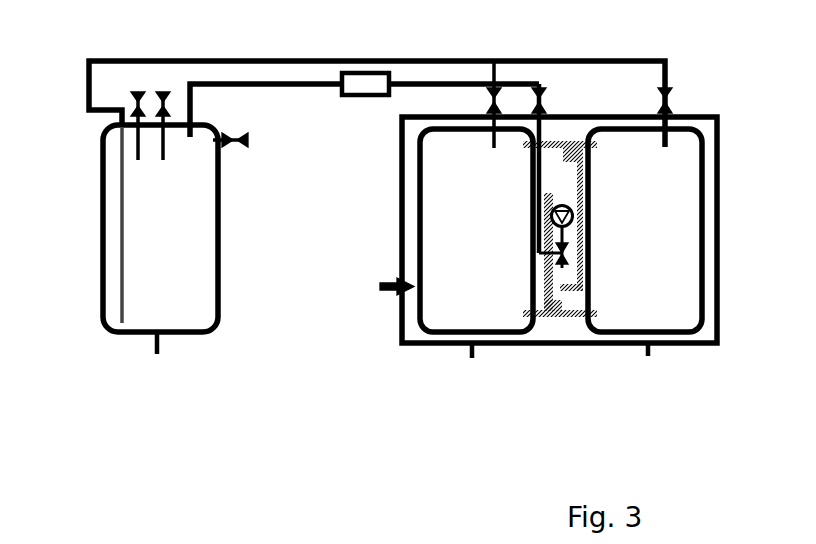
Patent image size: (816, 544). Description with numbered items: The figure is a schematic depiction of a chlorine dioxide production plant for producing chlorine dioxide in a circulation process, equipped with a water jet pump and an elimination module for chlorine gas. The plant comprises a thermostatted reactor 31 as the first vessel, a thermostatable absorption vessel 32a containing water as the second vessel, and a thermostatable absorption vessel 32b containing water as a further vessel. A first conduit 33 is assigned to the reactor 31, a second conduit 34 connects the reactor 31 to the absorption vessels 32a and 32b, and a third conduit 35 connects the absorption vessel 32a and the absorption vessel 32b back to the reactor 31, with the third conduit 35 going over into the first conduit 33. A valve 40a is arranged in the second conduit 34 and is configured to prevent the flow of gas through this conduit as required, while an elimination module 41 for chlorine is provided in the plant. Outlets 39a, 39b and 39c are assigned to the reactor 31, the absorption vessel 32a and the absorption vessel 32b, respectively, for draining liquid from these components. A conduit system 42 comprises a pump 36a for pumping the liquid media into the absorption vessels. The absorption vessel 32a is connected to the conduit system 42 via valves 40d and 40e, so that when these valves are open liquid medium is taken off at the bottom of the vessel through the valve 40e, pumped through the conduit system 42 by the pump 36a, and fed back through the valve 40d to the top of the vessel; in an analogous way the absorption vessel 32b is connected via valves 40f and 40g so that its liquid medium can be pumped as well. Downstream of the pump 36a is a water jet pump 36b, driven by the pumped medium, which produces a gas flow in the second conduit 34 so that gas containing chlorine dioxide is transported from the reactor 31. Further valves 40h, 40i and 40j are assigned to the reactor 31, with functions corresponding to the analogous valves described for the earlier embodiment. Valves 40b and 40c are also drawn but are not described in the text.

The reactor 31 is at (183, 312).
The absorption vessel 32a is at (443, 311).
The absorption vessel 32b is at (683, 314).
The first conduit 33 is at (120, 202).
The second conduit 34 is at (291, 82).
The third conduit 35 is at (414, 59).
The pump 36a is at (573, 204).
The water jet pump 36b is at (562, 252).
The outlet 39a is at (151, 356).
The outlet 39b is at (470, 360).
The outlet 39c is at (650, 358).
The valve 40a is at (546, 93).
The valve 40b is at (489, 100).
The valve 40c is at (674, 96).
The valve 40d is at (552, 141).
The valve 40e is at (546, 318).
The valve 40f is at (577, 141).
The valve 40g is at (578, 318).
The valve 40h is at (232, 141).
The valve 40i is at (133, 107).
The valve 40j is at (167, 100).
The elimination module 41 is at (365, 92).
The conduit system 42 is at (550, 295).